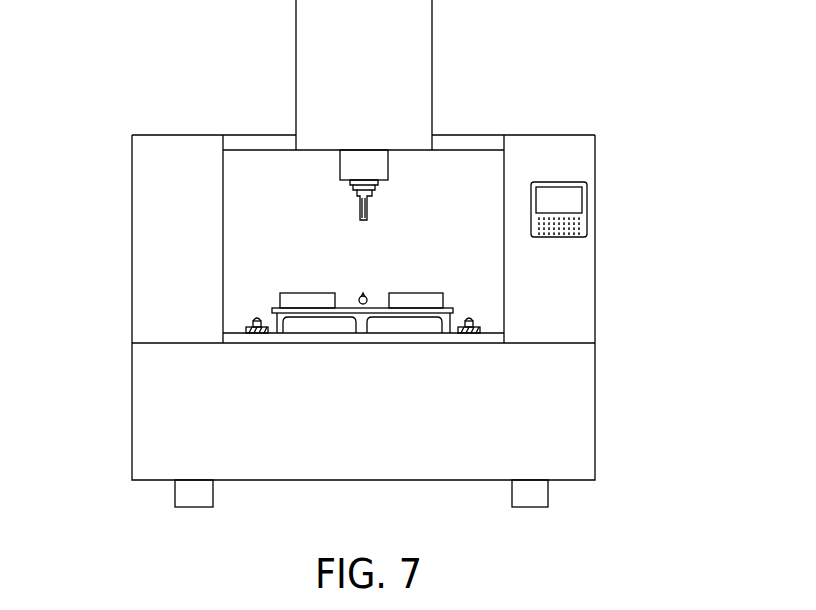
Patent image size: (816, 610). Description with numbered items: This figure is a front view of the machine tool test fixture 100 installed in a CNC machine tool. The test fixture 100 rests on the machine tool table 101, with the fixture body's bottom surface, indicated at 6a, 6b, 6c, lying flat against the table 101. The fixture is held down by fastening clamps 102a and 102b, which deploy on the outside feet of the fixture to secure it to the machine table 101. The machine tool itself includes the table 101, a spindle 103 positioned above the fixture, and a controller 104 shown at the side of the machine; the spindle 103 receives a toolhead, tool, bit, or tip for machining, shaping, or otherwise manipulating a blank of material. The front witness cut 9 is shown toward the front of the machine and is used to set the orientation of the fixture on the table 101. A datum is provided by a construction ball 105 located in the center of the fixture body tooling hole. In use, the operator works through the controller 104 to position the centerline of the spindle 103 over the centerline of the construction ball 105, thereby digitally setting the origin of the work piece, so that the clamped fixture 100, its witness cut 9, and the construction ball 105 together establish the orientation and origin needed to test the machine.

The fixture body bottom surface portion 6a is at (275, 333).
The fixture body bottom surface portion 6b is at (362, 333).
The fixture body bottom surface portion 6c is at (450, 333).
The front witness cut 9 is at (302, 307).
The machine tool test fixture 100 is at (448, 307).
The machine tool table 101 is at (247, 337).
The fastening clamp 102a is at (266, 324).
The fastening clamp 102b is at (472, 326).
The spindle 103 is at (366, 165).
The controller 104 is at (566, 202).
The construction ball 105 is at (362, 296).